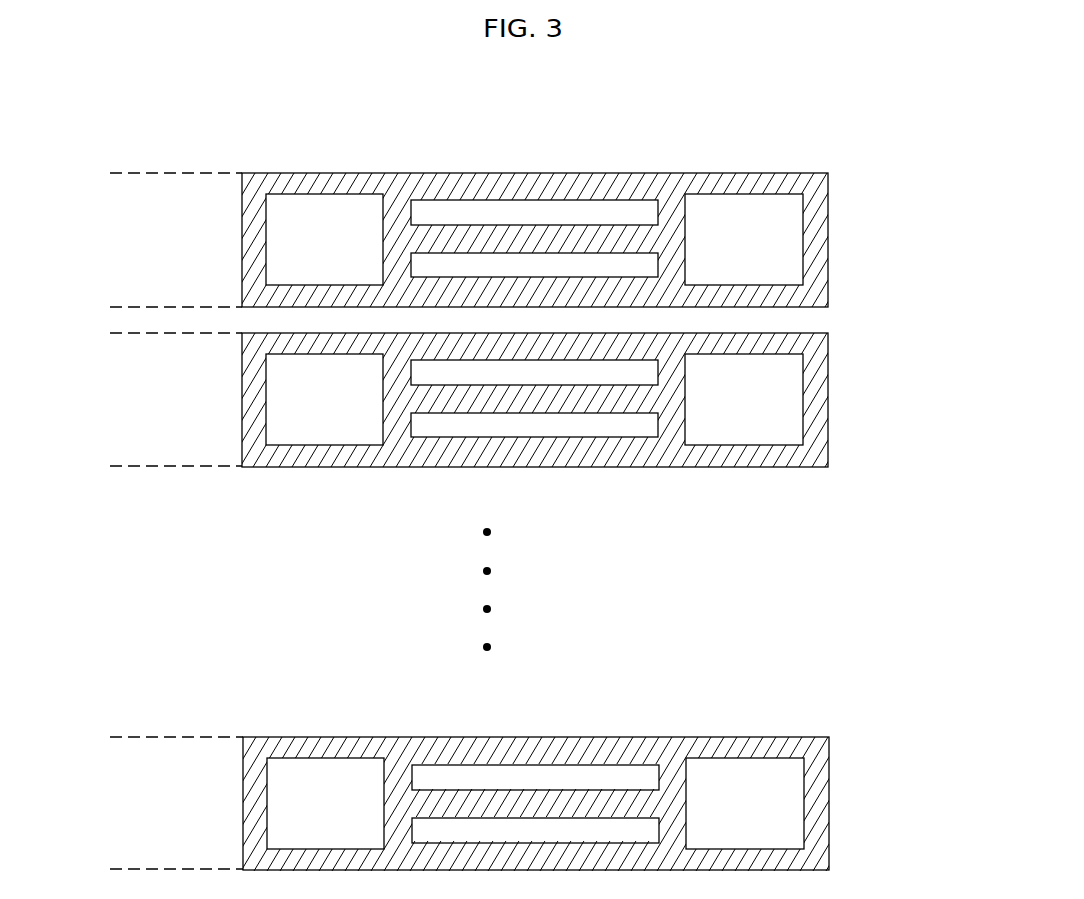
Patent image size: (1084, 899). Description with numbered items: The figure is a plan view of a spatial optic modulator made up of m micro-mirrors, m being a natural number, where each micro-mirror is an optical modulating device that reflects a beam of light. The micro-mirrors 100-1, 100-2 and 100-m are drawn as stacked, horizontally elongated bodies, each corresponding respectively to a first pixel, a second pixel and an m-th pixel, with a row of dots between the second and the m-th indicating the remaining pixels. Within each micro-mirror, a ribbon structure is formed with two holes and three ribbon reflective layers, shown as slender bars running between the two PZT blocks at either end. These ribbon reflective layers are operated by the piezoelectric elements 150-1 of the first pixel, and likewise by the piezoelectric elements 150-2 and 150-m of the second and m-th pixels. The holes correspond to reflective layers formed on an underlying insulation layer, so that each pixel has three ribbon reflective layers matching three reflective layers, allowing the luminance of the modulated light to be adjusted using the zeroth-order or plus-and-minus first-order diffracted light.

The micro-mirror 100-1 is at (500, 186).
The micro-mirror 100-2 is at (500, 461).
The micro-mirror 100-m is at (501, 752).
The piezoelectric element 150-1 is at (792, 243).
The piezoelectric element 150-2 is at (792, 395).
The piezoelectric element 150-m is at (790, 803).